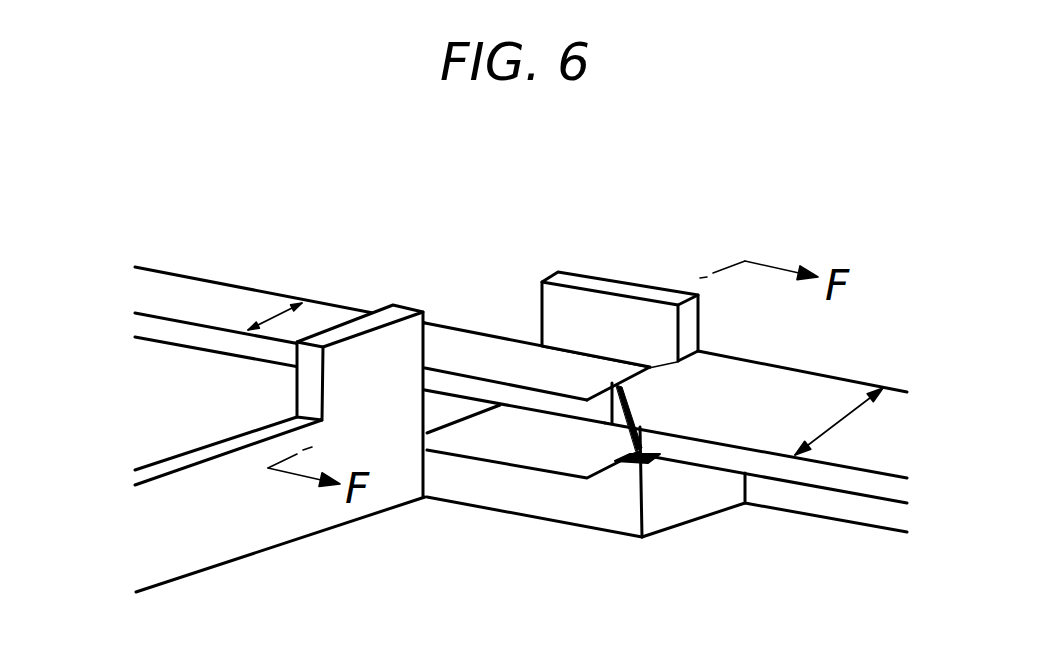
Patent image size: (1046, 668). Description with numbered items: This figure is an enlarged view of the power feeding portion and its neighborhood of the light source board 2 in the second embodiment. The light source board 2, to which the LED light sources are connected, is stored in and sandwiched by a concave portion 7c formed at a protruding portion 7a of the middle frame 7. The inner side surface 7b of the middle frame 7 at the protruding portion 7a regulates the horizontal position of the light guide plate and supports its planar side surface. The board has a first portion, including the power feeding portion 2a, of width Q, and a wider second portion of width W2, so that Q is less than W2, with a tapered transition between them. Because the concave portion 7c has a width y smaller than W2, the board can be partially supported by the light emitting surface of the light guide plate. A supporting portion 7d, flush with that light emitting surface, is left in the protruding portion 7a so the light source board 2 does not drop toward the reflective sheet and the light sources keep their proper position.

The light source board 2 is at (793, 410).
The power feeding portion 2a is at (162, 292).
The middle frame 7 is at (192, 543).
The protruding portion 7a is at (513, 487).
The inner side surface 7b is at (578, 507).
The concave portion 7c is at (500, 430).
The supporting portion 7d is at (632, 468).